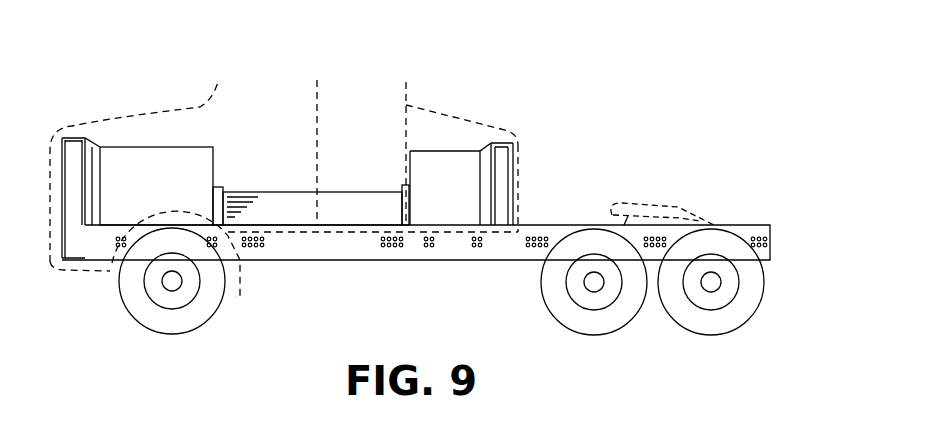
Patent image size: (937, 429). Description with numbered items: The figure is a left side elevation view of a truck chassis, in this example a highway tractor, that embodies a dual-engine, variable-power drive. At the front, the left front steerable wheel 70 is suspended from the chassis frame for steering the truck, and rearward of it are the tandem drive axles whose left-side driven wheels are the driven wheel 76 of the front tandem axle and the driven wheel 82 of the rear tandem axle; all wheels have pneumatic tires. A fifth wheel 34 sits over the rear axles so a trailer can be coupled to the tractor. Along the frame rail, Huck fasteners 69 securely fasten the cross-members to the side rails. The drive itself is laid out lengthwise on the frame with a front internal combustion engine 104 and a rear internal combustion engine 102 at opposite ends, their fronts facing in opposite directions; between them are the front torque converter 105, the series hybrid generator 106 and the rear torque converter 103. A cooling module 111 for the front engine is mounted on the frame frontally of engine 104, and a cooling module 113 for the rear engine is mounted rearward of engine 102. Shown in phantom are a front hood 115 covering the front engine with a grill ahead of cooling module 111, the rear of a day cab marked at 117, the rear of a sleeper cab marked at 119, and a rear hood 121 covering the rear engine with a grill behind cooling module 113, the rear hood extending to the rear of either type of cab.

The fifth wheel 34 is at (638, 212).
The Huck fasteners 69 is at (121, 248).
The left front steerable wheel 70 is at (208, 330).
The left driven wheel of first drive axle 76 is at (563, 328).
The left driven wheel of second drive axle 82 is at (733, 333).
The rear internal combustion engine 102 is at (460, 151).
The rear torque converter 103 is at (405, 185).
The front internal combustion engine 104 is at (158, 147).
The front torque converter 105 is at (220, 186).
The series hybrid generator 106 is at (374, 191).
The cooling module 111 is at (75, 138).
The cooling module 113 is at (514, 177).
The front hood 115 is at (200, 107).
The rear of day cab 117 is at (320, 97).
The rear of sleeper cab 119 is at (407, 97).
The rear hood 121 is at (512, 132).